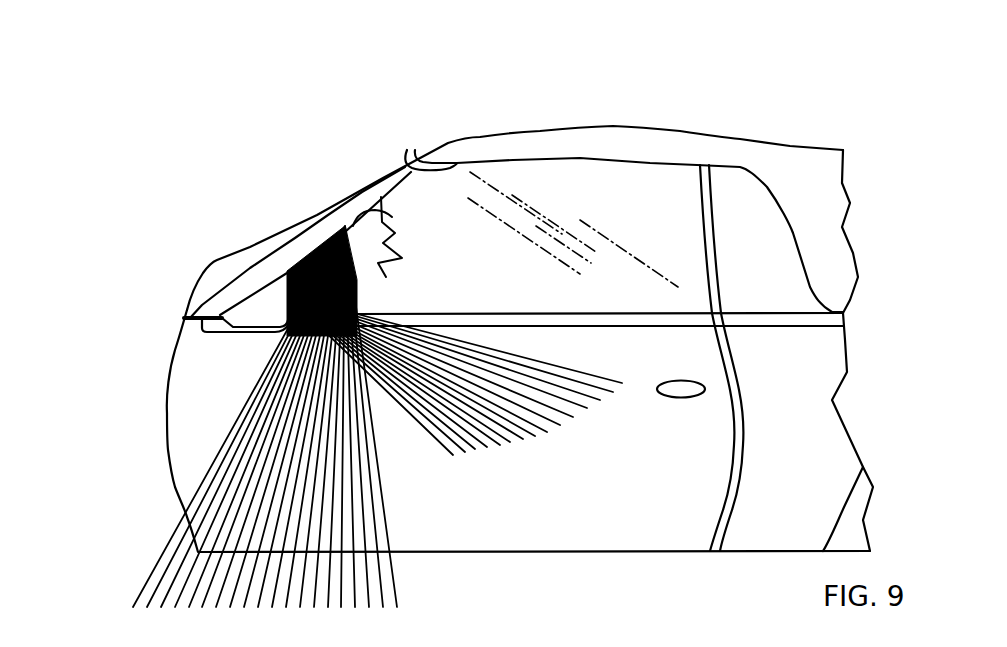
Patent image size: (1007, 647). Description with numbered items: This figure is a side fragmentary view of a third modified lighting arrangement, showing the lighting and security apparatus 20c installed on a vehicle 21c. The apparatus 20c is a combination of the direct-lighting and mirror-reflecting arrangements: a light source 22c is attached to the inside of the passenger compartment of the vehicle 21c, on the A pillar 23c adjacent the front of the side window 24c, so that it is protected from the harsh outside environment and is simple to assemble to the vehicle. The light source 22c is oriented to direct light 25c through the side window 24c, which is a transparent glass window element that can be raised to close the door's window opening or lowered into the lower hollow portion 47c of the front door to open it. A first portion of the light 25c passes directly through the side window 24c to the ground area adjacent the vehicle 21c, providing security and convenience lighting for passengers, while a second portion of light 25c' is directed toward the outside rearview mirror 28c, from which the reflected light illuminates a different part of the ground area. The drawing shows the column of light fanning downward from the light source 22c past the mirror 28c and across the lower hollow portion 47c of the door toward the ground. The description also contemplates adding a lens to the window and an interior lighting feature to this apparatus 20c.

The lighting and security apparatus 20c is at (346, 167).
The vehicle 21c is at (565, 92).
The light source 22c is at (383, 216).
The A pillar 23c is at (323, 222).
The side window 24c is at (668, 221).
The light 25c is at (389, 244).
The second portion of light 25c' is at (377, 397).
The outside rearview mirror 28c is at (247, 302).
The lower hollow portion 47c is at (632, 447).